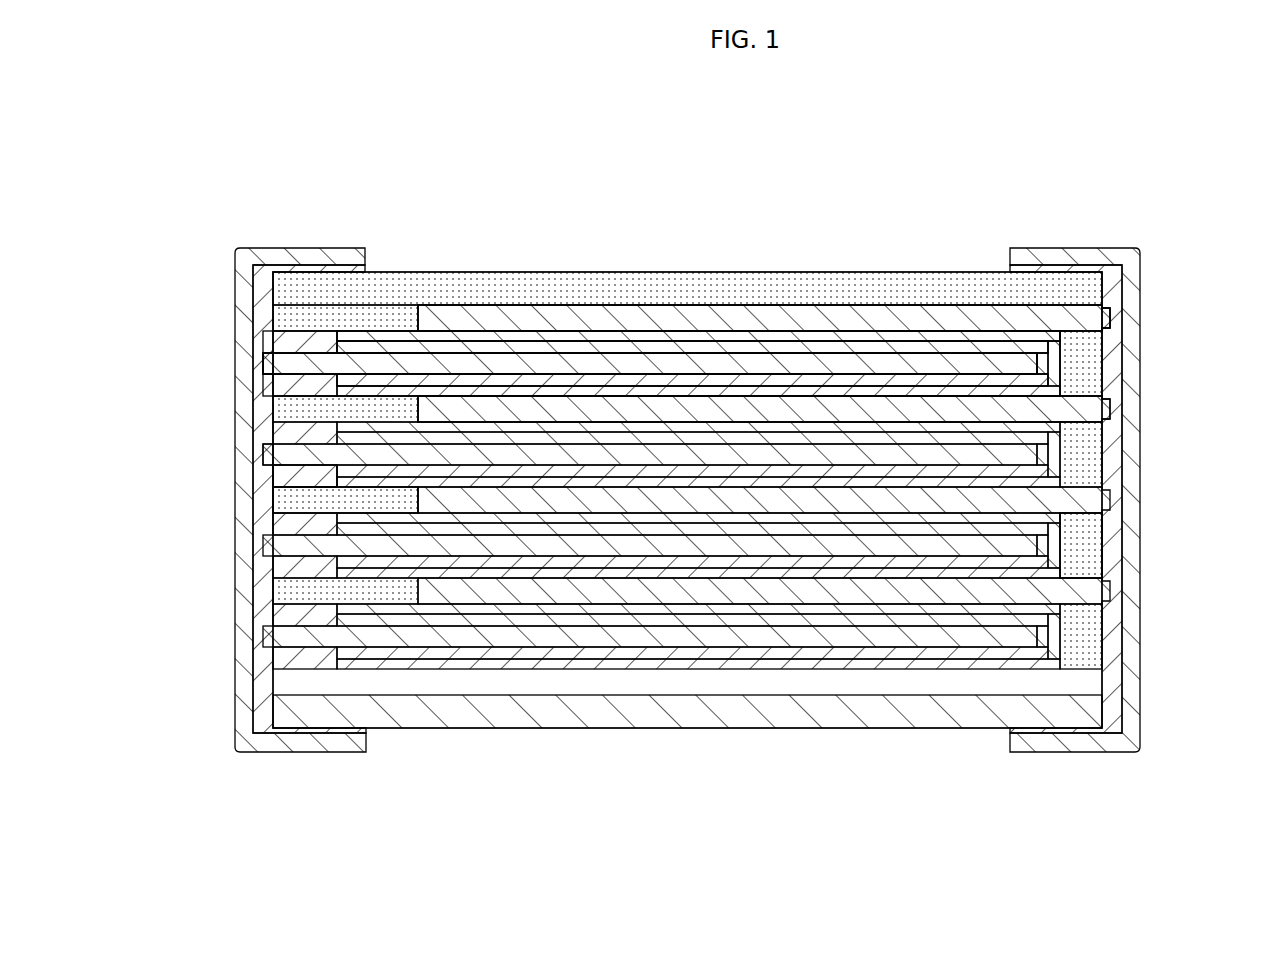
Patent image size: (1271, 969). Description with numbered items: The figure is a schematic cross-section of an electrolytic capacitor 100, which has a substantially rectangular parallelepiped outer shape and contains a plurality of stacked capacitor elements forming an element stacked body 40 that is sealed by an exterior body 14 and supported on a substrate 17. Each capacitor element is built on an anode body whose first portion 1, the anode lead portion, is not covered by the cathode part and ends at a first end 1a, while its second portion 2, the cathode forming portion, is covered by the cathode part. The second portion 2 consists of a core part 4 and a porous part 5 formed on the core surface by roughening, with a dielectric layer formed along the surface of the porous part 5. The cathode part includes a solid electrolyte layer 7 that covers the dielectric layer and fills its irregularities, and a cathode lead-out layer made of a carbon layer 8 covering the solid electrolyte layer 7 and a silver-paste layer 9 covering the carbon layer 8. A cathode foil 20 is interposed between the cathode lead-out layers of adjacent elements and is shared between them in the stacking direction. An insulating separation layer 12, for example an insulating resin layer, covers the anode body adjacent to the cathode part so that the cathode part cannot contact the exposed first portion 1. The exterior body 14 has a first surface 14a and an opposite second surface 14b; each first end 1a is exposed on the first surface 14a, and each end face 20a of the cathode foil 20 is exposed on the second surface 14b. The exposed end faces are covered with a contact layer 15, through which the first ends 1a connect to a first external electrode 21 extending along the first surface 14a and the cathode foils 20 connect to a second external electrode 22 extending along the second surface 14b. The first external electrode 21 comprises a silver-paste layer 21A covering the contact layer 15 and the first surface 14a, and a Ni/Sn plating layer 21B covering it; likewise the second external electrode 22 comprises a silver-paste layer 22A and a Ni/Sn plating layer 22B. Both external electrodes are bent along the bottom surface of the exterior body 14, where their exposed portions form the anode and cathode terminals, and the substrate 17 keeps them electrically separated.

The electrolytic capacitor 100 is at (337, 163).
The laminate 40 is at (1065, 182).
The first portion 1 is at (307, 360).
The first end 1a is at (262, 363).
The exterior body 14 is at (388, 290).
The first surface 14a is at (270, 519).
The second surface 14b is at (1112, 519).
The cathode foil 20 is at (462, 315).
The end face of cathode foil 20a is at (1112, 318).
The carbon layer 8 is at (518, 332).
The silver-paste layer 9 is at (518, 332).
The solid electrolyte layer 7 is at (620, 350).
The second portion 2 is at (855, 222).
The core part 4 is at (777, 357).
The porous part 5 is at (827, 332).
The contact layer 15 is at (1117, 407).
The separation layer 12 is at (283, 482).
The substrate 17 is at (775, 715).
The first external electrode 21 is at (162, 560).
The silver-paste layer 21A is at (258, 595).
The Ni/Sn plating layer 21B is at (243, 641).
The second external electrode 22 is at (1212, 560).
The silver-paste layer 22A is at (1115, 585).
The Ni/Sn plating layer 22B is at (1133, 641).